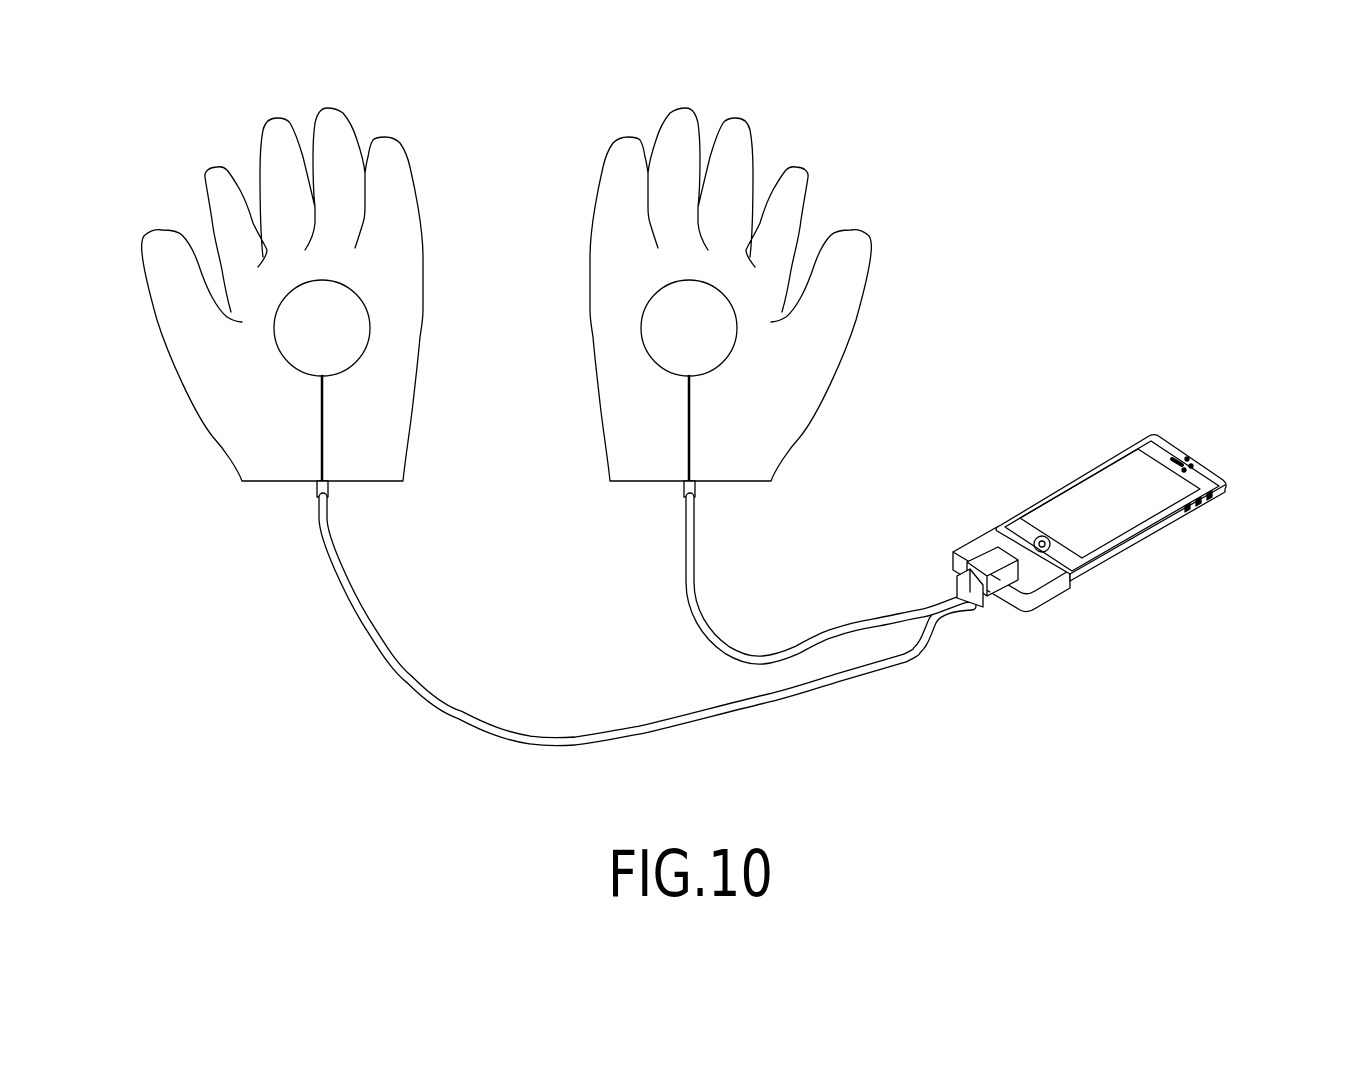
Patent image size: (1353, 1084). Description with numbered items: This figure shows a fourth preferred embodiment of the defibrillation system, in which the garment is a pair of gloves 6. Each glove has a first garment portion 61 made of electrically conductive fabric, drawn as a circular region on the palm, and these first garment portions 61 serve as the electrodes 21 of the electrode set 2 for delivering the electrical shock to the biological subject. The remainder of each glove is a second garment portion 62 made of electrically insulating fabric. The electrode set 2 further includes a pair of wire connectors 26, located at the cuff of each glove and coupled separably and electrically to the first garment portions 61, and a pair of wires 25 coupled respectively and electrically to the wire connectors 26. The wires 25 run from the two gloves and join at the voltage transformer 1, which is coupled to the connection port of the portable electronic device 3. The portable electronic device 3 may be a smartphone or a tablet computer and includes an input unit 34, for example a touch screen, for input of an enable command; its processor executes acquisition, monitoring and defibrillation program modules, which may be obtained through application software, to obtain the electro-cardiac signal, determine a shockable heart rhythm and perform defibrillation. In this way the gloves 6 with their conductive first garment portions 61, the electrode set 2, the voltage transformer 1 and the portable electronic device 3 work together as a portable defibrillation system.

The voltage transformer 1 is at (1048, 600).
The electrode set 2 is at (862, 683).
The portable electronic device 3 is at (1138, 543).
The gloves 6 is at (872, 243).
The electrodes 21 is at (371, 328).
The wires 25 is at (780, 700).
The wire connectors 26 is at (315, 488).
The input unit 34 is at (1112, 532).
The first garment portions 61 is at (639, 342).
The second garment portion 62 is at (362, 407).